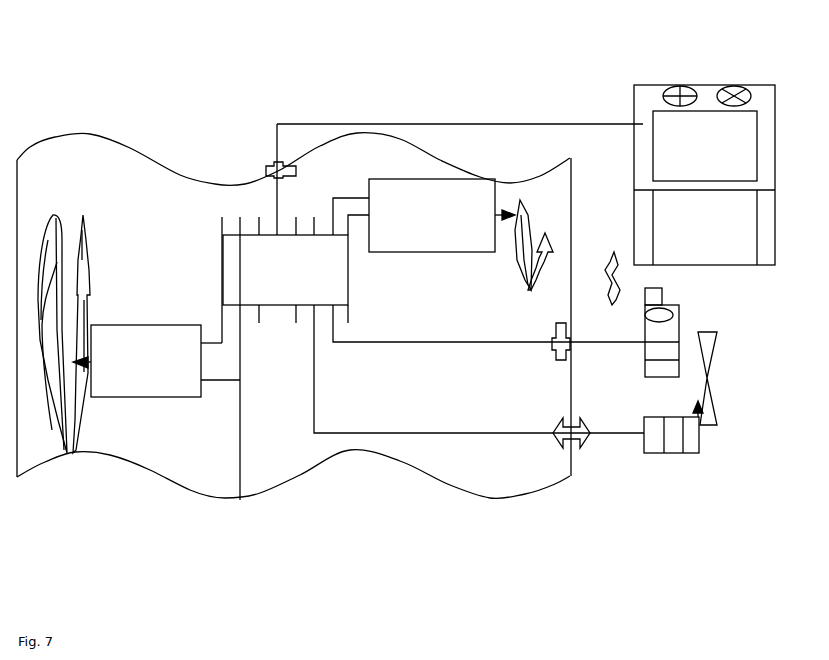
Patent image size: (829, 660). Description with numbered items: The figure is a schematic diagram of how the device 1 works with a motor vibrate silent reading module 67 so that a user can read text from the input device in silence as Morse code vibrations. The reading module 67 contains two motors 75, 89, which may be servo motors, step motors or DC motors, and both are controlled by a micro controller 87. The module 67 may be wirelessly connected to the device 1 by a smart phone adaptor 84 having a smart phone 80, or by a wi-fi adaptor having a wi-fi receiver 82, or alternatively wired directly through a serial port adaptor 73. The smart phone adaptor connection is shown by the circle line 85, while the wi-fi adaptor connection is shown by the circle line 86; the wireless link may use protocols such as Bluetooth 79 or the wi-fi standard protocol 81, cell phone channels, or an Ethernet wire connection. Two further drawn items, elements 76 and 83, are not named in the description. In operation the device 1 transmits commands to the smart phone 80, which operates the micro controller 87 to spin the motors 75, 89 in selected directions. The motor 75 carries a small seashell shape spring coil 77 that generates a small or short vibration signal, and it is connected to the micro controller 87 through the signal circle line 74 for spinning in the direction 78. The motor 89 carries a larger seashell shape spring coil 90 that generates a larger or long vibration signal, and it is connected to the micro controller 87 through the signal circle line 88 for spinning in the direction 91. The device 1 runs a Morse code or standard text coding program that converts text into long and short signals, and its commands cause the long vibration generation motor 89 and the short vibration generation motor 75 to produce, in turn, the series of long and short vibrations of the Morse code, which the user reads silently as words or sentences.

The device 1 is at (642, 65).
The motor vibrate silent reading module 67 is at (90, 116).
The serial port adaptor 73 is at (258, 153).
The signal circle line 74 is at (334, 188).
The motor 75 is at (404, 156).
The control line 76 is at (459, 118).
The seashell shape spring coil 77 is at (515, 191).
The direction 78 is at (552, 226).
The Bluetooth 79 is at (636, 279).
The smart phone 80 is at (673, 315).
The wi-fi 802.11 81 is at (731, 350).
The wi-fi receiver 82 is at (713, 443).
The valve 83 is at (552, 456).
The smart phone adaptor 84 is at (548, 381).
The circle line 85 is at (425, 350).
The circle line 86 is at (352, 441).
The micro controller 87 is at (278, 296).
The signal circle line 88 is at (223, 352).
The motor 89 is at (166, 410).
The seashell shape spring coil 90 is at (74, 457).
The direction 91 is at (37, 400).